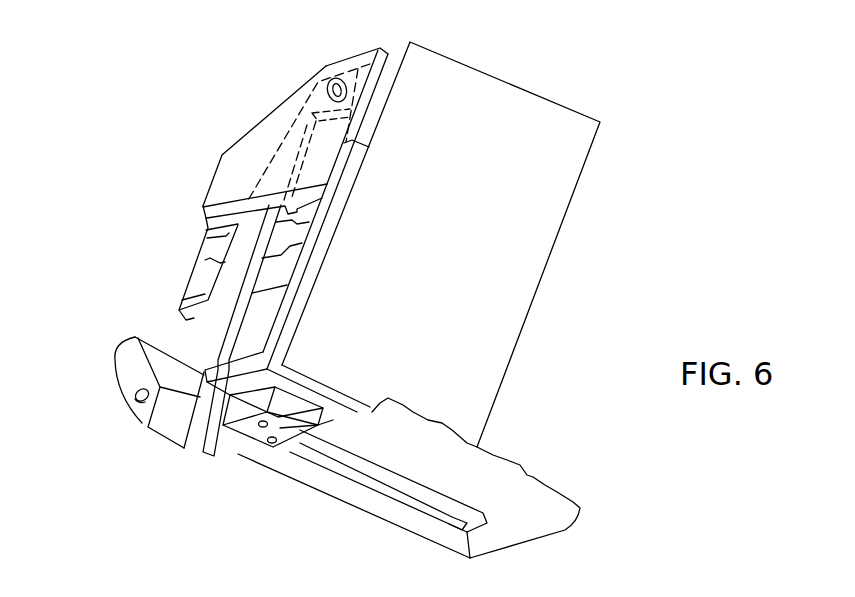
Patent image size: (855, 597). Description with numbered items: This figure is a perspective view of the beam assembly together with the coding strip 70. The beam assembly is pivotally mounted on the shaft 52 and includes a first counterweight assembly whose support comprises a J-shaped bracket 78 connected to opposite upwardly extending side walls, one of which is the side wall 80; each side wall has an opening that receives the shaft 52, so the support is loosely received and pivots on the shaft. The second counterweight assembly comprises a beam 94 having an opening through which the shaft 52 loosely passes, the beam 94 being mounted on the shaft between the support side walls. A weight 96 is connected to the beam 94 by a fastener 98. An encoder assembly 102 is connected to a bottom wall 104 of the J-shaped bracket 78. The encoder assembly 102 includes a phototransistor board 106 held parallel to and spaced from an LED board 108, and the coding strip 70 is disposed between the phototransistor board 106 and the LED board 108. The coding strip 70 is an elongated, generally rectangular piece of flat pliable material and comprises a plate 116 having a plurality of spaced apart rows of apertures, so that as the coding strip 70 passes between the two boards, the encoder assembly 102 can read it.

The shaft 52 is at (343, 78).
The coding strip 70 is at (537, 488).
The J-shaped bracket 78 is at (233, 367).
The side wall 80 is at (252, 153).
The beam 94 is at (262, 345).
The weight 96 is at (132, 404).
The fastener 98 is at (137, 403).
The encoder assembly 102 is at (289, 448).
The bottom wall 104 is at (248, 381).
The phototransistor board 106 is at (326, 410).
The LED board 108 is at (445, 513).
The plate 116 is at (509, 564).